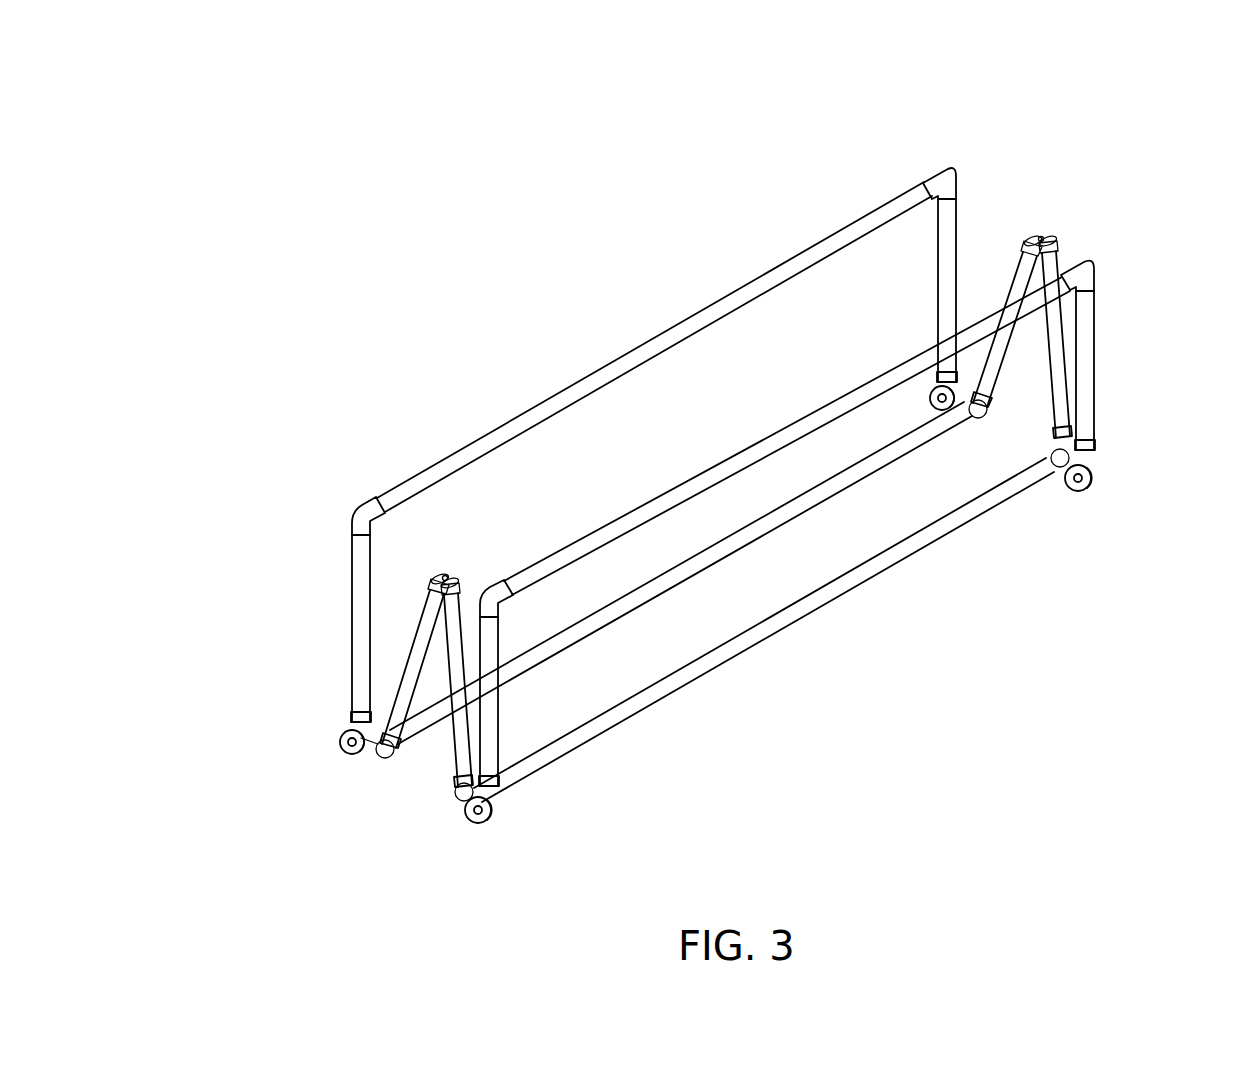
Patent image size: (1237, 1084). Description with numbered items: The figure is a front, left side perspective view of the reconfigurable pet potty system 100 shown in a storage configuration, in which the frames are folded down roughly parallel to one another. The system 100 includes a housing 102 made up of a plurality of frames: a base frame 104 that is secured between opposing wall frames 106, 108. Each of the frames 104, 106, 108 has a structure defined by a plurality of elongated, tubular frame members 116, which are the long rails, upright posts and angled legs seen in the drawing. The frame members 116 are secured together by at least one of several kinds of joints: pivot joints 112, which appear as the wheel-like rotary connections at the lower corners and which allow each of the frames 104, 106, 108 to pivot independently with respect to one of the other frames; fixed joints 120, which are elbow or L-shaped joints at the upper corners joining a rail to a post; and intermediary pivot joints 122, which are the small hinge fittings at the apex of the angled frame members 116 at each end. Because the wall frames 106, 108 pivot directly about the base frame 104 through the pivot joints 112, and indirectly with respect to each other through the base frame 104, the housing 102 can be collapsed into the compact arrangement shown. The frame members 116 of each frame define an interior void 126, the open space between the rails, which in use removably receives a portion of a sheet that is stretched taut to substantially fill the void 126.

The reconfigurable pet potty system 100 is at (306, 82).
The housing 102 is at (1050, 240).
The base frame 104 is at (448, 747).
The wall frame 106 is at (1095, 404).
The wall frame 108 is at (958, 208).
The pivot joint 112 is at (930, 397).
The tubular frame member 116 is at (938, 280).
The fixed joint 120 is at (940, 168).
The intermediary pivot joint 122 is at (1043, 233).
The interior void 126 is at (720, 345).